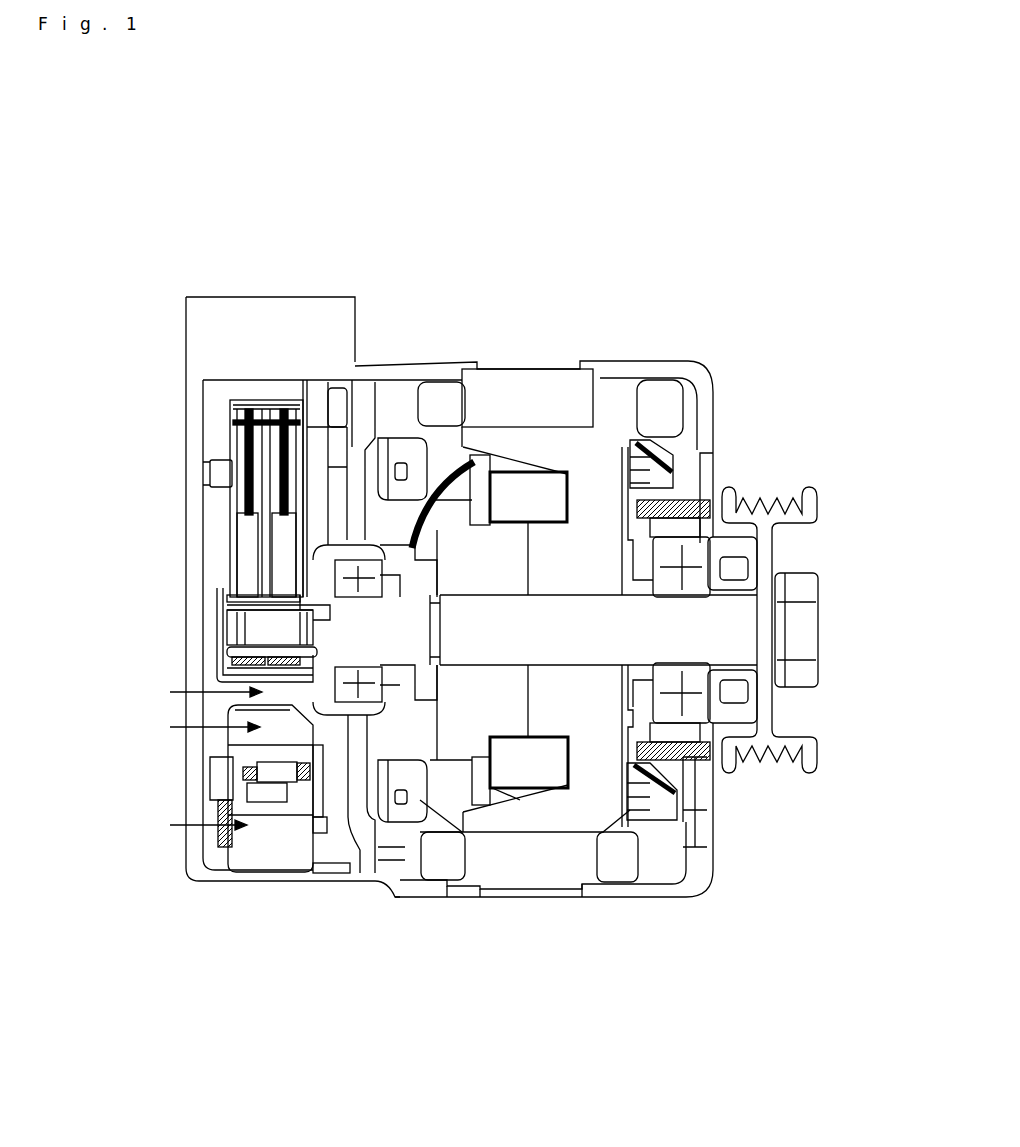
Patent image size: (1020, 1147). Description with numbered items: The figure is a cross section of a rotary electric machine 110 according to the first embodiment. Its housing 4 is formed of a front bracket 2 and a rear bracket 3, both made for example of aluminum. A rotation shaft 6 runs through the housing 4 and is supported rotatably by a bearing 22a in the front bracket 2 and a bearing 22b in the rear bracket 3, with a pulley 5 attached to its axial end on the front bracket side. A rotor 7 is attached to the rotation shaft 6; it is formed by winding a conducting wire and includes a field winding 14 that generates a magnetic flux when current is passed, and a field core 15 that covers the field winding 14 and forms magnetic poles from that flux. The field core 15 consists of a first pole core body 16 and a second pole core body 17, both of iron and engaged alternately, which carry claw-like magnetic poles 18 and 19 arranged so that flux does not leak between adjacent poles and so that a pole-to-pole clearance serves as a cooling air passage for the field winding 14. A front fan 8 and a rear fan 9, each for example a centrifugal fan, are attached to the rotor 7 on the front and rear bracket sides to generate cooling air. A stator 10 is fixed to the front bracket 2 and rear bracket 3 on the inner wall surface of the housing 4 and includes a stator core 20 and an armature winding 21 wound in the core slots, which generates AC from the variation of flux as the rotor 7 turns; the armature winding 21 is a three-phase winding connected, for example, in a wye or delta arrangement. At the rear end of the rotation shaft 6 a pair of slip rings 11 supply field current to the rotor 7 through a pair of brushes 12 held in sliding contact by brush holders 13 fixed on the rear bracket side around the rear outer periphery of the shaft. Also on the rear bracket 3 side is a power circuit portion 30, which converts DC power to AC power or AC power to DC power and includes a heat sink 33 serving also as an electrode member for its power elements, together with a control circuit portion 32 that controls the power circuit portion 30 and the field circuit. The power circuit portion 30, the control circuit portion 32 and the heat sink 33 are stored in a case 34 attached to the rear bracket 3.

The vehicle AC generator 110 is at (783, 262).
The front bracket 2 is at (618, 395).
The rear bracket 3 is at (445, 363).
The housing 4 is at (710, 830).
The pulley 5 is at (815, 488).
The rotation shaft 6 is at (740, 632).
The rotor 7 is at (652, 630).
The front fan 8 is at (683, 451).
The rear fan 9 is at (400, 455).
The stator 10 is at (583, 269).
The slip rings 11 is at (253, 652).
The brushes 12 is at (247, 553).
The brush holders 13 is at (255, 455).
The field winding 14 is at (525, 498).
The field core 15 is at (593, 463).
The first pole core body 16 is at (483, 723).
The second pole core body 17 is at (557, 810).
The claw-like magnetic poles 18 is at (493, 463).
The claw-like magnetic poles 19 is at (502, 447).
The stator core 20 is at (557, 383).
The armature winding 21 is at (665, 392).
The bearing 22a is at (697, 548).
The bearing 22b is at (303, 585).
The power circuit portion 30 is at (268, 793).
The control circuit portion 32 is at (268, 297).
The heat sink 33 is at (240, 735).
The case 34 is at (187, 472).